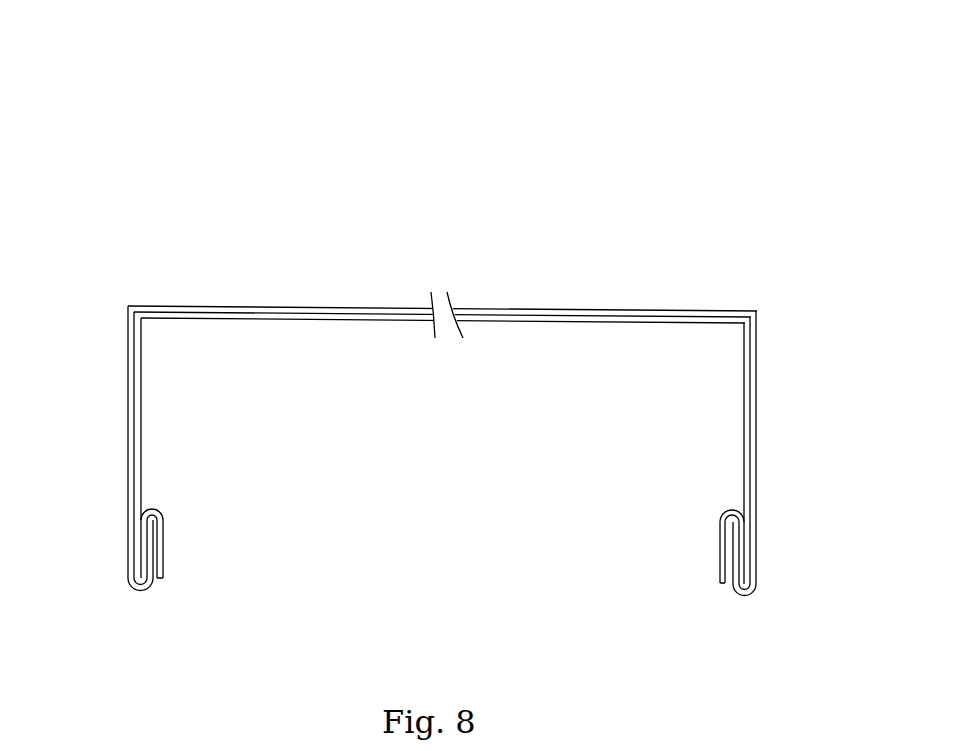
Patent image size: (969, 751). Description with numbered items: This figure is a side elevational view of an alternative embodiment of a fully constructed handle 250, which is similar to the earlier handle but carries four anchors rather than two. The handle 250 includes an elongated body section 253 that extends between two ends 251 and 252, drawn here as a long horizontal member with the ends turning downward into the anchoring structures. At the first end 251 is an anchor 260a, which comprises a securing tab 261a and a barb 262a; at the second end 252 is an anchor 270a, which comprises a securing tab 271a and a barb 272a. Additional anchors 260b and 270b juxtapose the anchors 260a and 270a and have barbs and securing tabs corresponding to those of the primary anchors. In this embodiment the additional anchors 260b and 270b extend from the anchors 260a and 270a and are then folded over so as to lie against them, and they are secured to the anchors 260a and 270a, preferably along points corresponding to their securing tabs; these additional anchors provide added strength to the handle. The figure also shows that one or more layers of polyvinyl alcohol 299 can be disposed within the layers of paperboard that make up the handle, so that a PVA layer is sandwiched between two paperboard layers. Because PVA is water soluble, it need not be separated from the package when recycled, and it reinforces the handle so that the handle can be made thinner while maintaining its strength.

The handle 250 is at (486, 262).
The elongated body section 253 is at (267, 313).
The layer of polyvinyl alcohol (PVA) 299 is at (142, 312).
The end 251 is at (128, 535).
The anchor 260a is at (150, 583).
The additional anchor 260b is at (160, 552).
The securing tab 261a is at (150, 543).
The barb 262a is at (155, 510).
The end 252 is at (750, 535).
The anchor 270a is at (743, 593).
The additional anchor 270b is at (723, 528).
The securing tab 271a is at (732, 547).
The barb 272a is at (737, 517).